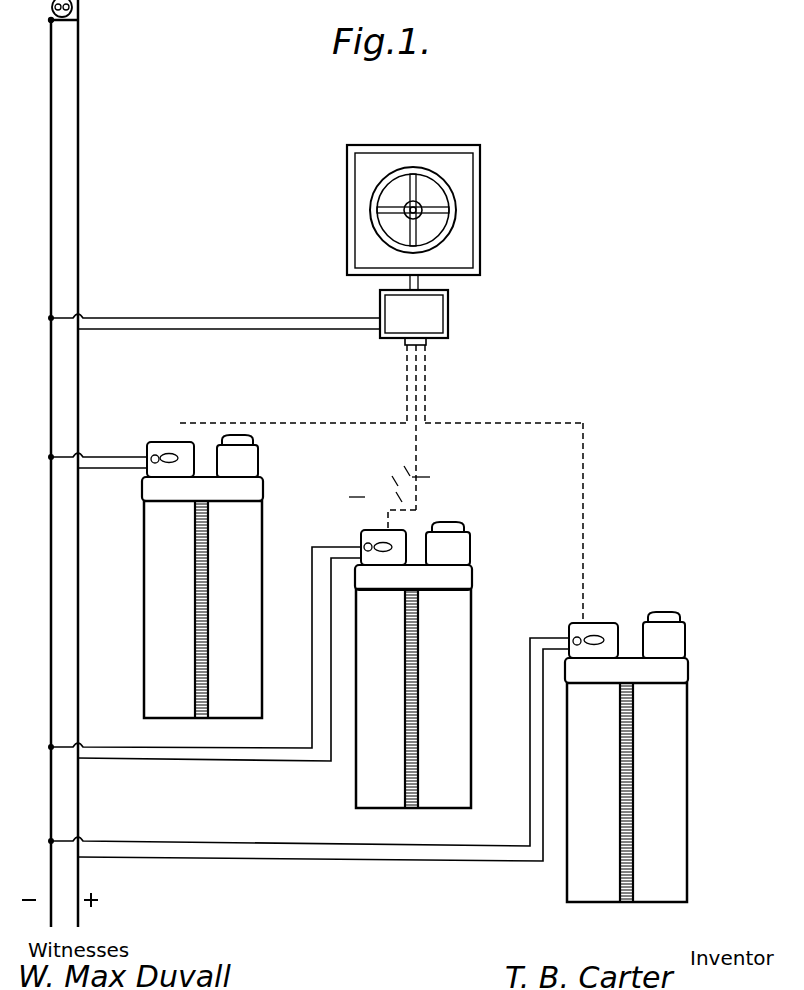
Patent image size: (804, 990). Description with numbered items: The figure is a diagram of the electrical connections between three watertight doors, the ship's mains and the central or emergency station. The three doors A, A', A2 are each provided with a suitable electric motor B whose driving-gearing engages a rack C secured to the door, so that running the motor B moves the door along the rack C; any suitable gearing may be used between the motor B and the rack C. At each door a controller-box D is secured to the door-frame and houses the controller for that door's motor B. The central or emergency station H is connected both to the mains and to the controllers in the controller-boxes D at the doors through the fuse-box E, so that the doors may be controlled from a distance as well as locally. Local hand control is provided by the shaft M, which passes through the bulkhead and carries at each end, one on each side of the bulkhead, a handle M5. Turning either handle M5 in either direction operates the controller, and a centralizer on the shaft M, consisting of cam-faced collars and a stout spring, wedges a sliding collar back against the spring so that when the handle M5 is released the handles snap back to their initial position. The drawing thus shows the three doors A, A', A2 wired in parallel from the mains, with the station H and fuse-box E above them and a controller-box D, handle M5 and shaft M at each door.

The central or emergency station H is at (463, 237).
The fuse-box E is at (435, 327).
The door A is at (202, 597).
The door A' is at (413, 686).
The door A2 is at (626, 780).
The electric motor B is at (250, 463).
The rack C is at (212, 666).
The controller-box D is at (160, 441).
The shaft M is at (147, 455).
The handle M5 is at (173, 456).